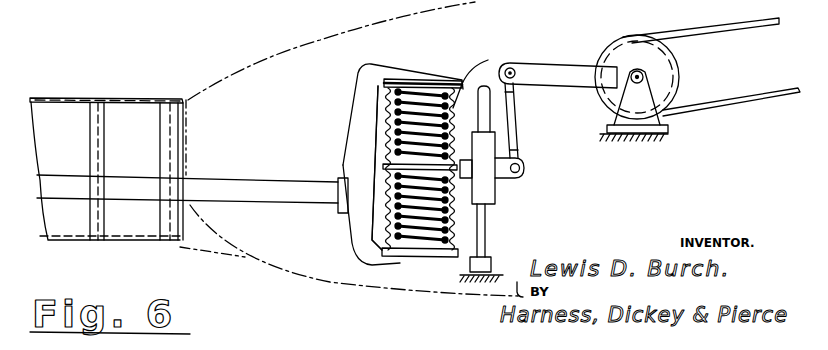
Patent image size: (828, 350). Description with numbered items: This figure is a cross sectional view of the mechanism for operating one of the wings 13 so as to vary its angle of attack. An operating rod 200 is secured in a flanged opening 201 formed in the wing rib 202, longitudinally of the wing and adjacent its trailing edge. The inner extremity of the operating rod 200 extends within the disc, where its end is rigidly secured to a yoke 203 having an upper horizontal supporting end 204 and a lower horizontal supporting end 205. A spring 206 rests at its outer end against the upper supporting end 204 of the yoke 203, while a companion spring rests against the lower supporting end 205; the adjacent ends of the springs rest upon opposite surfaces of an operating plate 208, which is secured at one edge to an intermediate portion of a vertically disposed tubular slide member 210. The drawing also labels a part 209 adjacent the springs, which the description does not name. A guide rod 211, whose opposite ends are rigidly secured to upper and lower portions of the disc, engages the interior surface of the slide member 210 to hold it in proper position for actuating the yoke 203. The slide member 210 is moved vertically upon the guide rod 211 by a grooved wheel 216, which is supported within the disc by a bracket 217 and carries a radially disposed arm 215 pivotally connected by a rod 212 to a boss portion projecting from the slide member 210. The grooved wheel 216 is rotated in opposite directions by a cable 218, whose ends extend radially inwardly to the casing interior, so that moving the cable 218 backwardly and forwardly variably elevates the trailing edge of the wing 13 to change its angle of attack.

The wing 13 is at (45, 99).
The operating rod 200 is at (222, 182).
The flanged opening 201 is at (187, 157).
The wing rib 202 is at (178, 118).
The yoke 203 is at (355, 133).
The upper horizontal supporting end 204 is at (405, 74).
The lower horizontal supporting end 205 is at (399, 259).
The spring 206 is at (486, 75).
The operating plate 208 is at (386, 174).
The spring collar 209 is at (458, 198).
The tubular slide member 210 is at (487, 143).
The guide rod 211 is at (486, 243).
The rod 212 is at (516, 110).
The radially disposed arm 215 is at (537, 64).
The grooved wheel 216 is at (663, 73).
The bracket 217 is at (667, 124).
The cable 218 is at (755, 97).